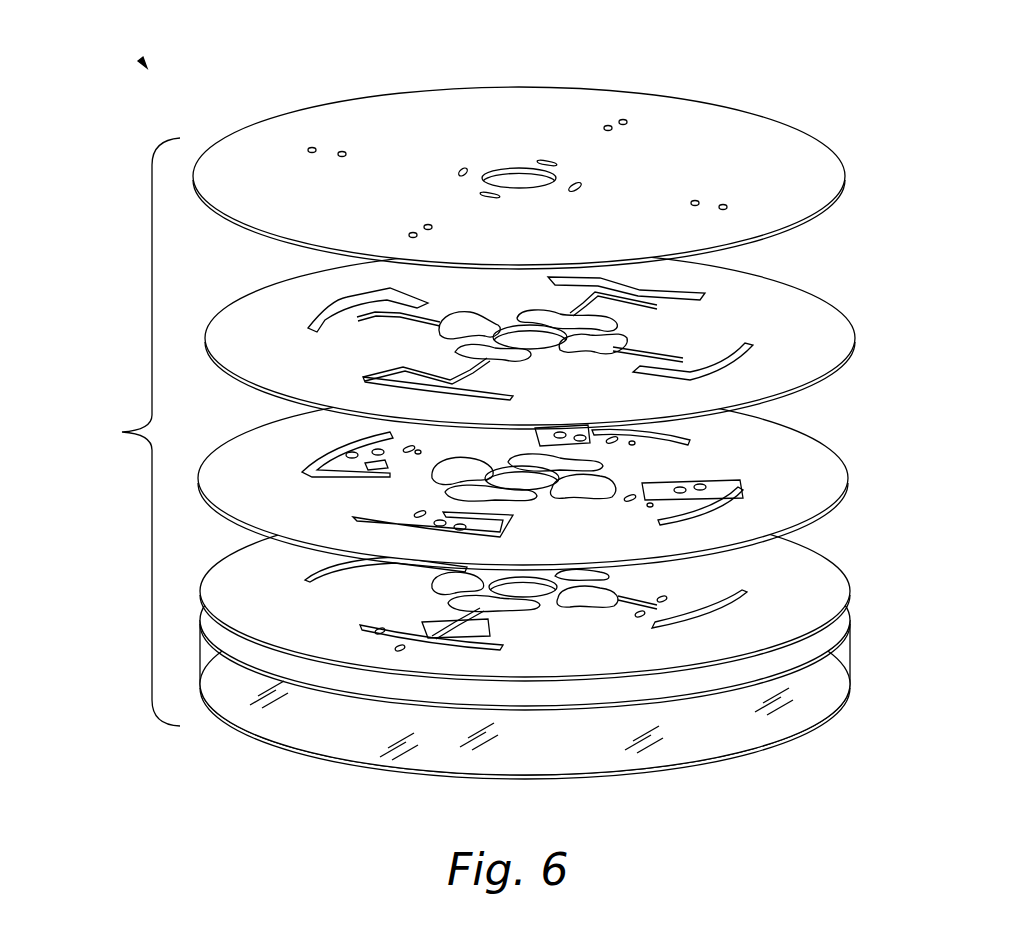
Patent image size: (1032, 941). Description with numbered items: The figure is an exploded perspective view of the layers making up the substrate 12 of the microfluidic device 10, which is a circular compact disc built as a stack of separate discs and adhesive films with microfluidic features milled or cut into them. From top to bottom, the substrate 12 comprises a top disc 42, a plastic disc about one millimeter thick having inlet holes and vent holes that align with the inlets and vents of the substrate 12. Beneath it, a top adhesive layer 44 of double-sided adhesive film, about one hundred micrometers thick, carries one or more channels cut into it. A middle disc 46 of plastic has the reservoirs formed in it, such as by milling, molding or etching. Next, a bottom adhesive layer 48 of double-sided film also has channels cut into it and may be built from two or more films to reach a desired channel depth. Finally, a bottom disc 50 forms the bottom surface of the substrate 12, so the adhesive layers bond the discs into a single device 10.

The microfluidic device 10 is at (147, 67).
The substrate 12 is at (120, 432).
The top disc 42 is at (735, 127).
The top adhesive layer 44 is at (832, 318).
The middle disc 46 is at (828, 470).
The bottom adhesive layer 48 is at (832, 566).
The bottom disc 50 is at (828, 688).